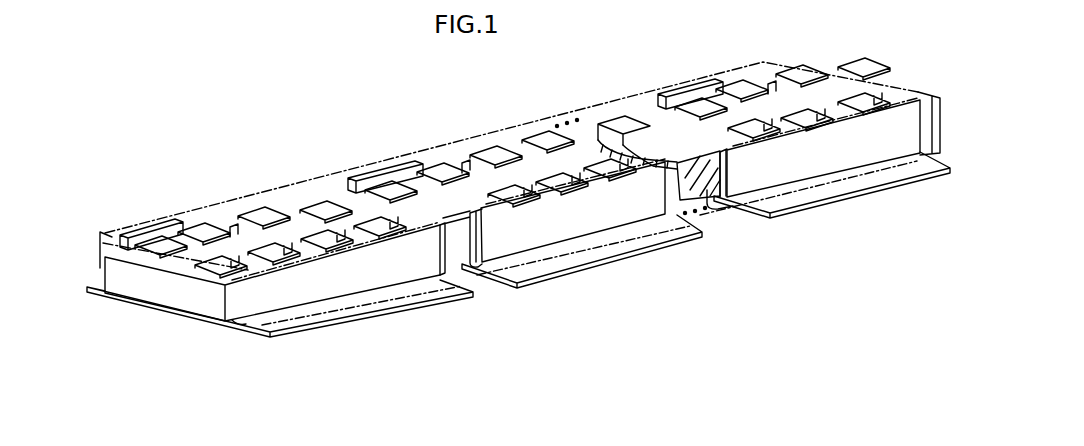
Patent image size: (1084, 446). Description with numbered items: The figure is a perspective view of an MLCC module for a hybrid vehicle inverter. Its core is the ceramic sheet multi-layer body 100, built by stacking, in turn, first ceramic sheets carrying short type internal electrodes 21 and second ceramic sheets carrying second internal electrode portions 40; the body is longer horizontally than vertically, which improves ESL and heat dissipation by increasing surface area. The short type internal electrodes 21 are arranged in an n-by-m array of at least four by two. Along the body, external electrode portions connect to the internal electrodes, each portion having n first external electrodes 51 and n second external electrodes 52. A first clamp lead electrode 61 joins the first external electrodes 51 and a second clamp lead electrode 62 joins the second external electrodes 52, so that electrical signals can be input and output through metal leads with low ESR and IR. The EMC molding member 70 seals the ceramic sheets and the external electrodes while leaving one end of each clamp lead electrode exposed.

The ceramic sheet multi-layer body 100 is at (175, 299).
The short type internal electrodes 21 is at (267, 222).
The second internal electrode portions 40 is at (598, 122).
The first external electrodes 51 is at (278, 190).
The second external electrodes 52 is at (238, 322).
The first clamp lead electrode 61 is at (193, 213).
The second clamp lead electrode 62 is at (372, 312).
The EMC molding member 70 is at (497, 128).